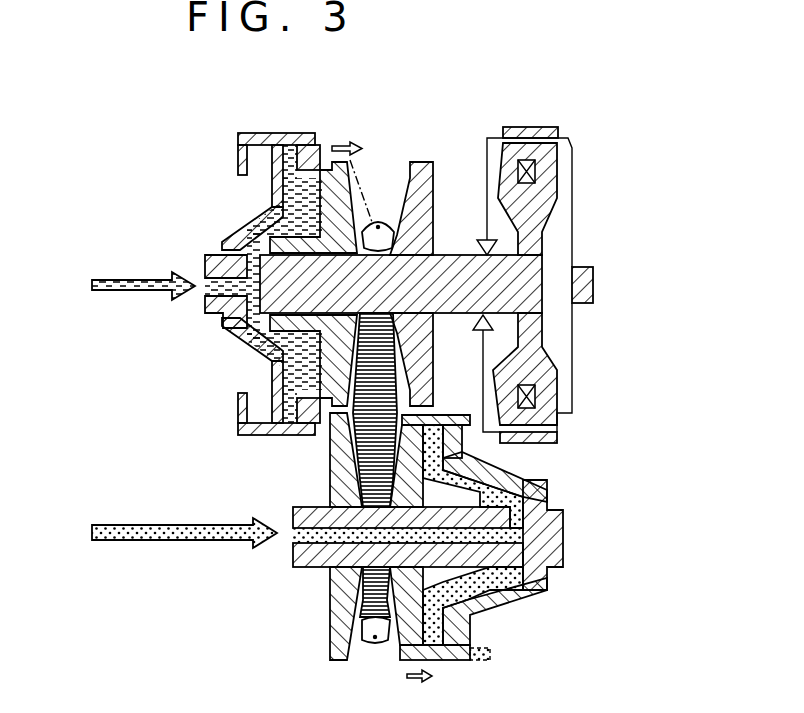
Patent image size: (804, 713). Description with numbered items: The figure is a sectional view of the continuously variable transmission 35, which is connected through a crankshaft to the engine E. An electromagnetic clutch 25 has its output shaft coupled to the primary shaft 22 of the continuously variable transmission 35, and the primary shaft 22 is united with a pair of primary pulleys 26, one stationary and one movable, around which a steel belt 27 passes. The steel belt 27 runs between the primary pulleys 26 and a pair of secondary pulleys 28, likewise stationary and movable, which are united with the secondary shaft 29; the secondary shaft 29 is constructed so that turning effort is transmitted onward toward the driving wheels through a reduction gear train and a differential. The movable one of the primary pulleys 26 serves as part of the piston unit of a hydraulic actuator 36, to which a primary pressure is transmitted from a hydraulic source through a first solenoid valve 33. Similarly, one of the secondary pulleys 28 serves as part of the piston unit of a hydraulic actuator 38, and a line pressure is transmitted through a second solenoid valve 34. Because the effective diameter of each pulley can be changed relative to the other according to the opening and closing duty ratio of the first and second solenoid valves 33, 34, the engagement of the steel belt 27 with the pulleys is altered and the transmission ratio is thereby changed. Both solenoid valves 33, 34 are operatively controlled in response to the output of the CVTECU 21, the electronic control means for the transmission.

The CVTECU 21 is at (533, 118).
The primary shaft 22 is at (450, 257).
The electromagnetic clutch 25 is at (553, 195).
The primary pulleys 26 is at (420, 163).
The steel belt 27 is at (380, 228).
The secondary pulleys 28 is at (333, 642).
The secondary shaft 29 is at (513, 552).
The first solenoid valve 33 is at (114, 265).
The second solenoid valve 34 is at (156, 525).
The continuously variable transmission 35 is at (624, 136).
The hydraulic actuator 36 is at (258, 201).
The hydraulic actuator 38 is at (490, 623).
The engine E is at (593, 285).